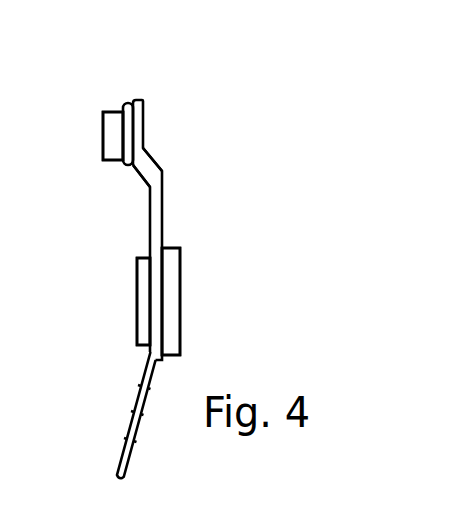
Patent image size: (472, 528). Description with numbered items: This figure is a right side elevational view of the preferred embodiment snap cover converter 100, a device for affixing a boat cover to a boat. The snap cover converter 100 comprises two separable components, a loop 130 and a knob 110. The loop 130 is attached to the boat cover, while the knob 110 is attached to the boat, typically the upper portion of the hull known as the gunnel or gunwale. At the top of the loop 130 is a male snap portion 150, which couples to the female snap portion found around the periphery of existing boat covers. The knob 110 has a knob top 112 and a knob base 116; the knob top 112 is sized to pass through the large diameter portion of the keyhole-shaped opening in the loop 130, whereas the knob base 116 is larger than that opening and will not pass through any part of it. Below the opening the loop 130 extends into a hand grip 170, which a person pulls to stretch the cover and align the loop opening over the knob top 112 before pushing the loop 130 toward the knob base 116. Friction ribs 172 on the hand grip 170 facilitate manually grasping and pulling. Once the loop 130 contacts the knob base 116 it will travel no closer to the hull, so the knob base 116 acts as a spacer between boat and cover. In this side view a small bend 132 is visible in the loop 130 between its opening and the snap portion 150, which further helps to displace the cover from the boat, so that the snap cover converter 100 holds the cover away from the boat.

The snap cover converter 100 is at (197, 111).
The knob 110 is at (128, 270).
The knob top 112 is at (138, 312).
The knob base 116 is at (176, 303).
The loop 130 is at (167, 215).
The bent portion 132 is at (154, 162).
The male snap portion 150 is at (110, 145).
The hand grip 170 is at (126, 424).
The friction ribs 172 is at (132, 442).